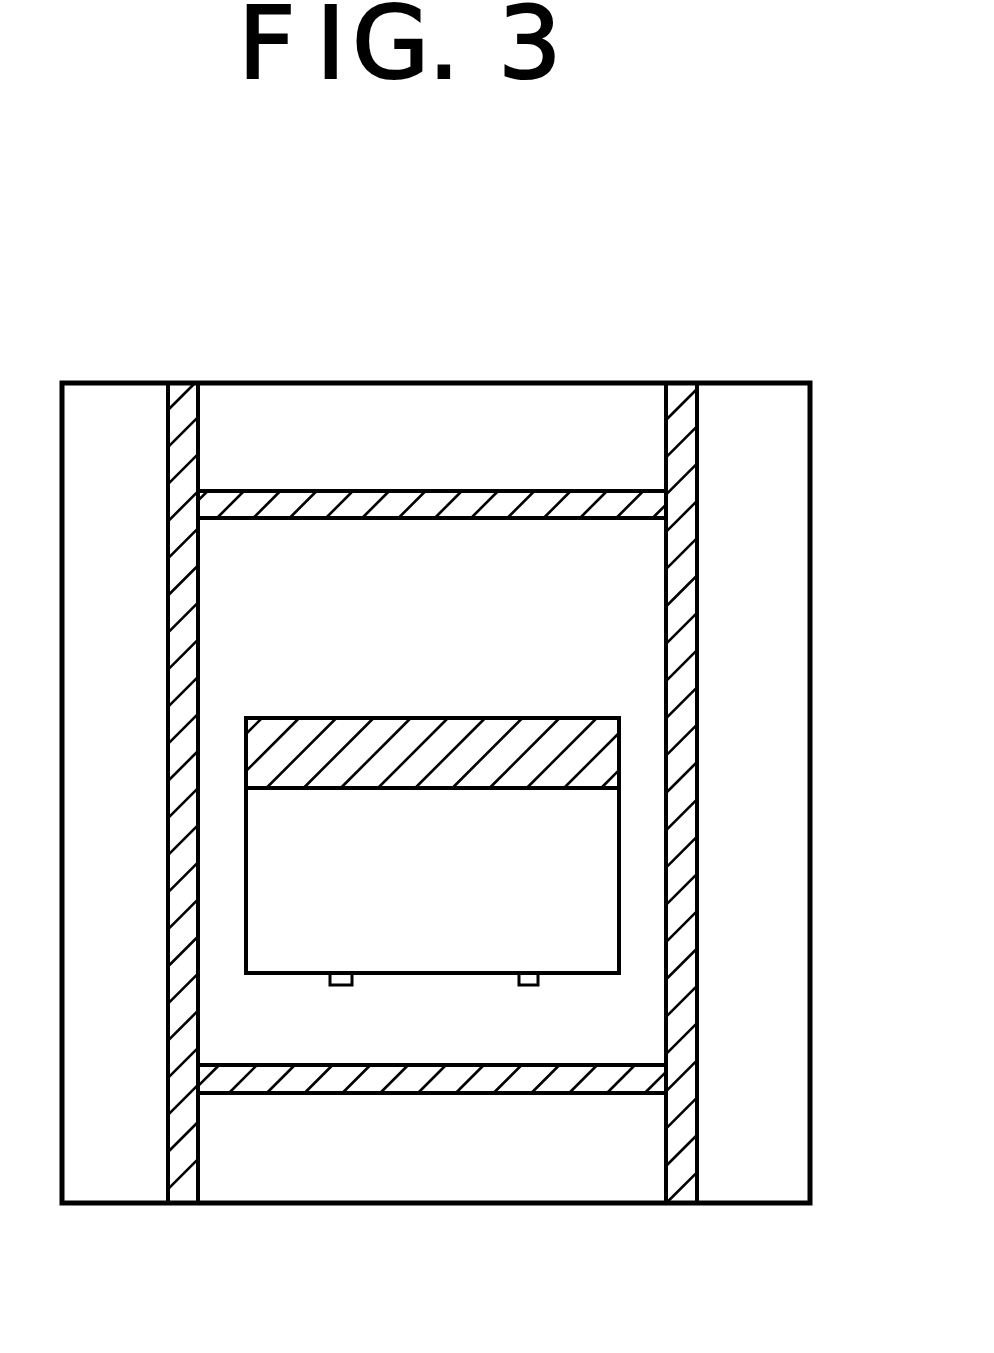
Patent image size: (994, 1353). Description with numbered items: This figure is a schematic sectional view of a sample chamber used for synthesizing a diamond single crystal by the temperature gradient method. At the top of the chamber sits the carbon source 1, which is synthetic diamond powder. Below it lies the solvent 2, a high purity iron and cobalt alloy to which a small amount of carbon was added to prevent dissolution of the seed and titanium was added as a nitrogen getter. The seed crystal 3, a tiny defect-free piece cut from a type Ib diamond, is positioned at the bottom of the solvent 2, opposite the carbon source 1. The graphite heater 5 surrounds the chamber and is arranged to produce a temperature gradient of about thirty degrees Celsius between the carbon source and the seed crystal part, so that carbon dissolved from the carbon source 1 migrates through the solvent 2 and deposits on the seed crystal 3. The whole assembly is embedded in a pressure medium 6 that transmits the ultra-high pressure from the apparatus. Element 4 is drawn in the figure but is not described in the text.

The carbon source 1 is at (571, 735).
The solvent 2 is at (593, 858).
The seed crystal 3 is at (538, 985).
The partition plates 4 is at (630, 578).
The graphite heater 5 is at (178, 792).
The pressure medium 6 is at (118, 1155).